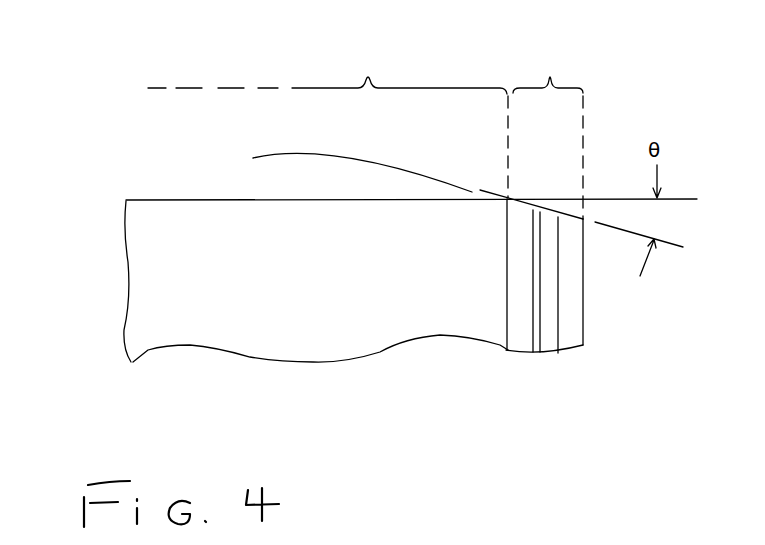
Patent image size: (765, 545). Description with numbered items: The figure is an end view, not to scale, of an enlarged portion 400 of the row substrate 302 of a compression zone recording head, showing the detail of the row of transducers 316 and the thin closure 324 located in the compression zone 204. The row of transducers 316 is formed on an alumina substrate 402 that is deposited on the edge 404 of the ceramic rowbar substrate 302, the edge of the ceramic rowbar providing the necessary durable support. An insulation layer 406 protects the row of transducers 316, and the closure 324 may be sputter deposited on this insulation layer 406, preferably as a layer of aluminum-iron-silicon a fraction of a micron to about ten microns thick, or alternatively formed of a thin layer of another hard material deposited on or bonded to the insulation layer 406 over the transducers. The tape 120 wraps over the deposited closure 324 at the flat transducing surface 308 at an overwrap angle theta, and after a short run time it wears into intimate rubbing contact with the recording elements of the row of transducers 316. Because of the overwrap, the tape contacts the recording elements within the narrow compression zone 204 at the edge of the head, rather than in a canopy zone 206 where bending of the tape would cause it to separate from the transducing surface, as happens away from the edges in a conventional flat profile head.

The tape 120 is at (697, 243).
The compression zone 204 is at (550, 70).
The canopy zone 206 is at (368, 68).
The row substrate 302 is at (125, 284).
The flat transducing surface 308 is at (208, 198).
The row of transducers 316 is at (533, 356).
The closure 324 is at (586, 318).
The enlarged portion 400 is at (606, 428).
The alumina substrate 402 is at (512, 352).
The edge 404 is at (506, 258).
The insulation layer 406 is at (550, 355).